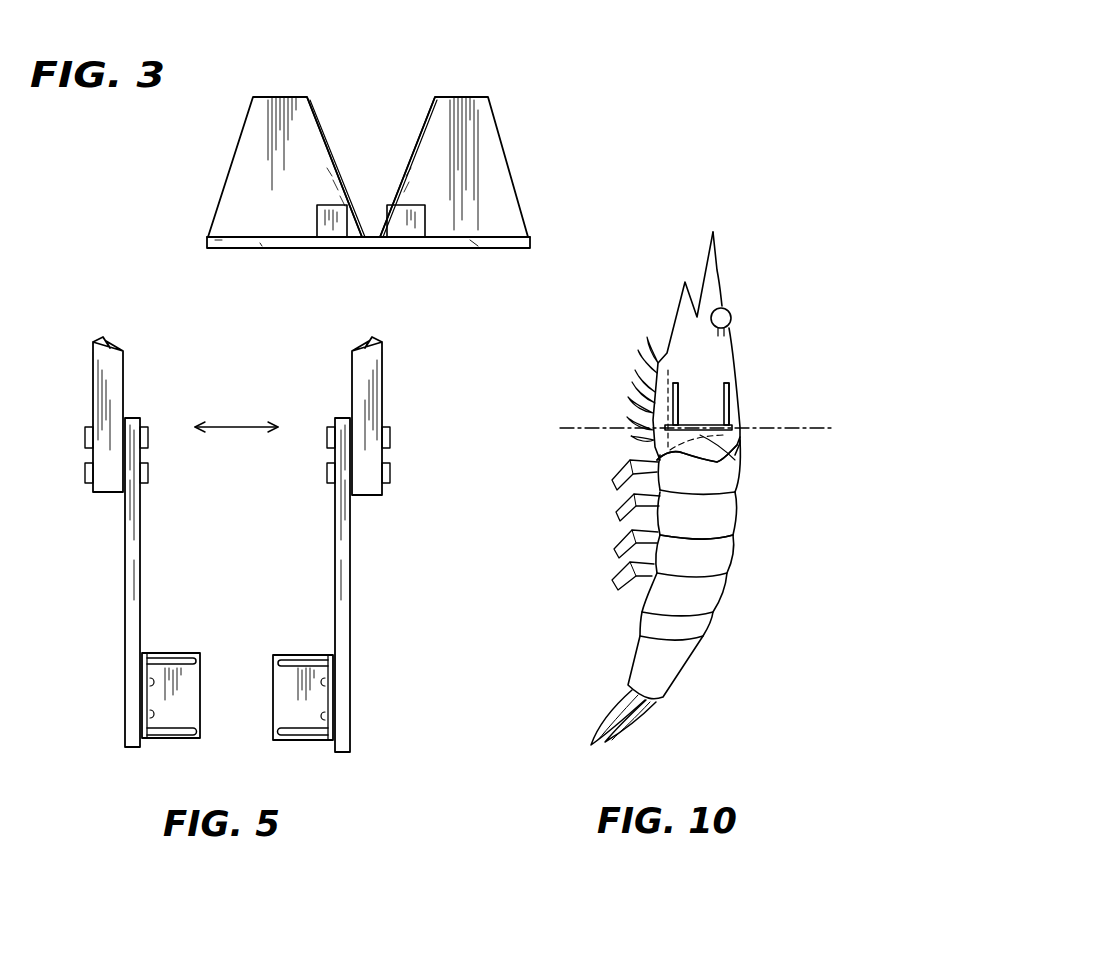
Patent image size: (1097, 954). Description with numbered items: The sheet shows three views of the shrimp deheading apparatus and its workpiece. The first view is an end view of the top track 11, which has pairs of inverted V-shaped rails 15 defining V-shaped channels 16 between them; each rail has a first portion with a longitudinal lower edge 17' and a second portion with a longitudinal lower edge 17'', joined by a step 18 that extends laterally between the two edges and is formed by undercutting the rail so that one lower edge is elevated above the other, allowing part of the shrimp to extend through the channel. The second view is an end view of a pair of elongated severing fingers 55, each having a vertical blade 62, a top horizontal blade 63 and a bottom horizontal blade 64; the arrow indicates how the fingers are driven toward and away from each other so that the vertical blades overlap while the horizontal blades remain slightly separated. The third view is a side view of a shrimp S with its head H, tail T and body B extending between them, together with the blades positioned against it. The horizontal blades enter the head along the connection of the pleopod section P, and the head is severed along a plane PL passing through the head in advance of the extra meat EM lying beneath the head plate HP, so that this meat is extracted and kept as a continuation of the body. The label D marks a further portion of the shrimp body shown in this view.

In FIG. 3, the top track 11 is at (508, 153).
In FIG. 3, the inverted V-shaped rails 15 is at (281, 97).
In FIG. 3, the V-shaped channels 16 is at (380, 113).
In FIG. 3, the step 18 is at (392, 213).
In FIG. 3, the longitudinal lower edge 17' is at (354, 263).
In FIG. 3, the longitudinal lower edge 17'' is at (352, 246).
In FIG. 5, the severing fingers 55 is at (140, 512).
In FIG. 5, the vertical blade 62 is at (272, 718).
In FIG. 10, the vertical blade 62 is at (735, 443).
In FIG. 5, the top horizontal blade 63 is at (292, 658).
In FIG. 10, the top horizontal blade 63 is at (730, 398).
In FIG. 5, the bottom horizontal blade 64 is at (300, 735).
In FIG. 10, the bottom horizontal blade 64 is at (655, 378).
In FIG. 10, the shrimp S is at (728, 258).
In FIG. 10, the tail T is at (642, 713).
In FIG. 10, the head H is at (732, 327).
In FIG. 10, the pleopod section P is at (653, 360).
In FIG. 10, the plane PL is at (587, 427).
In FIG. 10, the head plate HP is at (740, 438).
In FIG. 10, the extra meat EM is at (740, 470).
In FIG. 10, the dorsal segment D is at (735, 515).
In FIG. 10, the body B is at (735, 567).